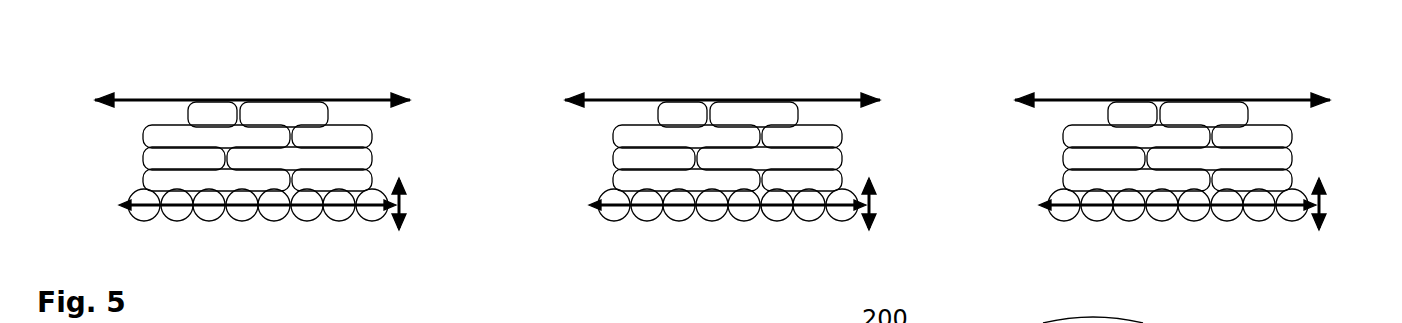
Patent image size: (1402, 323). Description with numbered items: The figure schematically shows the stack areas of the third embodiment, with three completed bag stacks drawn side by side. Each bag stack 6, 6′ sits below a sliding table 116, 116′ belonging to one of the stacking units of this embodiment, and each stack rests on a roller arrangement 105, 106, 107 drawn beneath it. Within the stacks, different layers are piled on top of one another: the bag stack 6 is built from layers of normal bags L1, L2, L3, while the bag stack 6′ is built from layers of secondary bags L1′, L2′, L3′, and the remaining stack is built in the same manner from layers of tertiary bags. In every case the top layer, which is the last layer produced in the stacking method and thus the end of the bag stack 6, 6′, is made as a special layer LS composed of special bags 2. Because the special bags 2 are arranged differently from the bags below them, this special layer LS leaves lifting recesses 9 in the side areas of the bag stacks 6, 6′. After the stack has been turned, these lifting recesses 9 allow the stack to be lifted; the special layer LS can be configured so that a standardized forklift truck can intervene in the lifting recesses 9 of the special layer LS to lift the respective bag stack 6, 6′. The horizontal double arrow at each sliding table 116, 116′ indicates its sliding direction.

The special bags 2 is at (280, 103).
The lifting recesses 9 is at (162, 117).
The special layer LS is at (313, 100).
The sliding table 116 is at (1172, 74).
The sliding table 116′ is at (722, 74).
The bag stack 6 is at (1186, 127).
The bag stack 6′ is at (739, 127).
The layer of normal bags L1 is at (1213, 176).
The layer of normal bags L2 is at (1141, 164).
The layer of normal bags L3 is at (1213, 140).
The layer of secondary bags L1′ is at (765, 176).
The layer of secondary bags L2′ is at (691, 164).
The layer of secondary bags L3′ is at (765, 140).
The roller conveyor 105 is at (1170, 226).
The roller conveyor 106 is at (720, 226).
The roller conveyor 107 is at (95, 215).